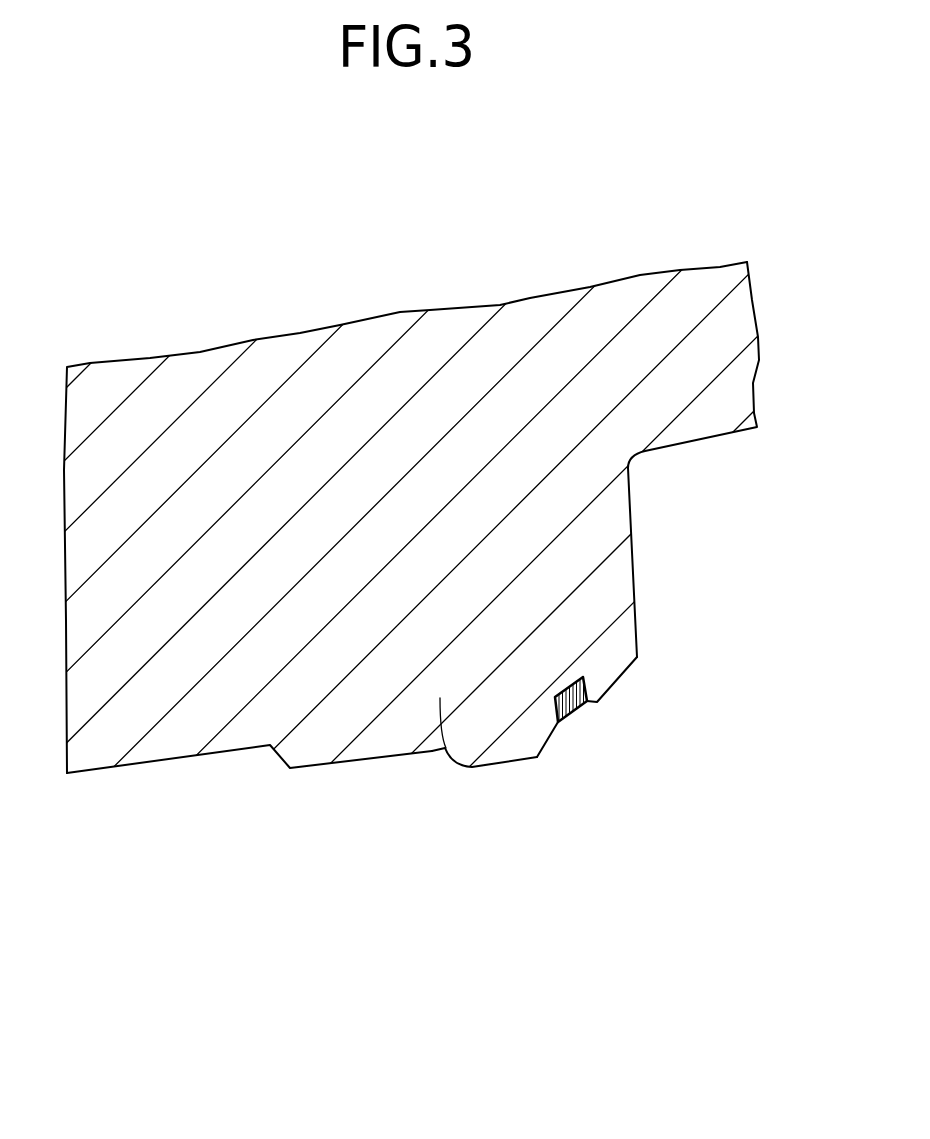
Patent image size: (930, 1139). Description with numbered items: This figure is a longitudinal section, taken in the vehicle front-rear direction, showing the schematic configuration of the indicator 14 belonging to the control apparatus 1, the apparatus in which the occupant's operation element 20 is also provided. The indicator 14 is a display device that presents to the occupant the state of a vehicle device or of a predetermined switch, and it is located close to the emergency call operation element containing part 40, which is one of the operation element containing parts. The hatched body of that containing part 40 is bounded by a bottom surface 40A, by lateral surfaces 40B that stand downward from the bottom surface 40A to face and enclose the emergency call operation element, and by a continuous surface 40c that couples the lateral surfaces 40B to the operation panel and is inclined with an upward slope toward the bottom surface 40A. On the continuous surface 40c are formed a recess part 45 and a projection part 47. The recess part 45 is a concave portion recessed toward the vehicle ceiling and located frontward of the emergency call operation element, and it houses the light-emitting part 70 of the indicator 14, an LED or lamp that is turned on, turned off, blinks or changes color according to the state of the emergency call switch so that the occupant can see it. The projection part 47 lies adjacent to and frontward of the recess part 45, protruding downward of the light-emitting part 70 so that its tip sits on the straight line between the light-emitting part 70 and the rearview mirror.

The control apparatus 1 is at (453, 237).
The indicator 14 is at (620, 847).
The operation element 20 is at (213, 755).
The emergency call operation element containing part 40 is at (740, 632).
The bottom surface 40A is at (700, 438).
The lateral surfaces 40B is at (637, 568).
The continuous surface 40c is at (615, 685).
The recess part 45 is at (570, 718).
The projection part 47 is at (505, 753).
The light-emitting part 70 is at (583, 706).